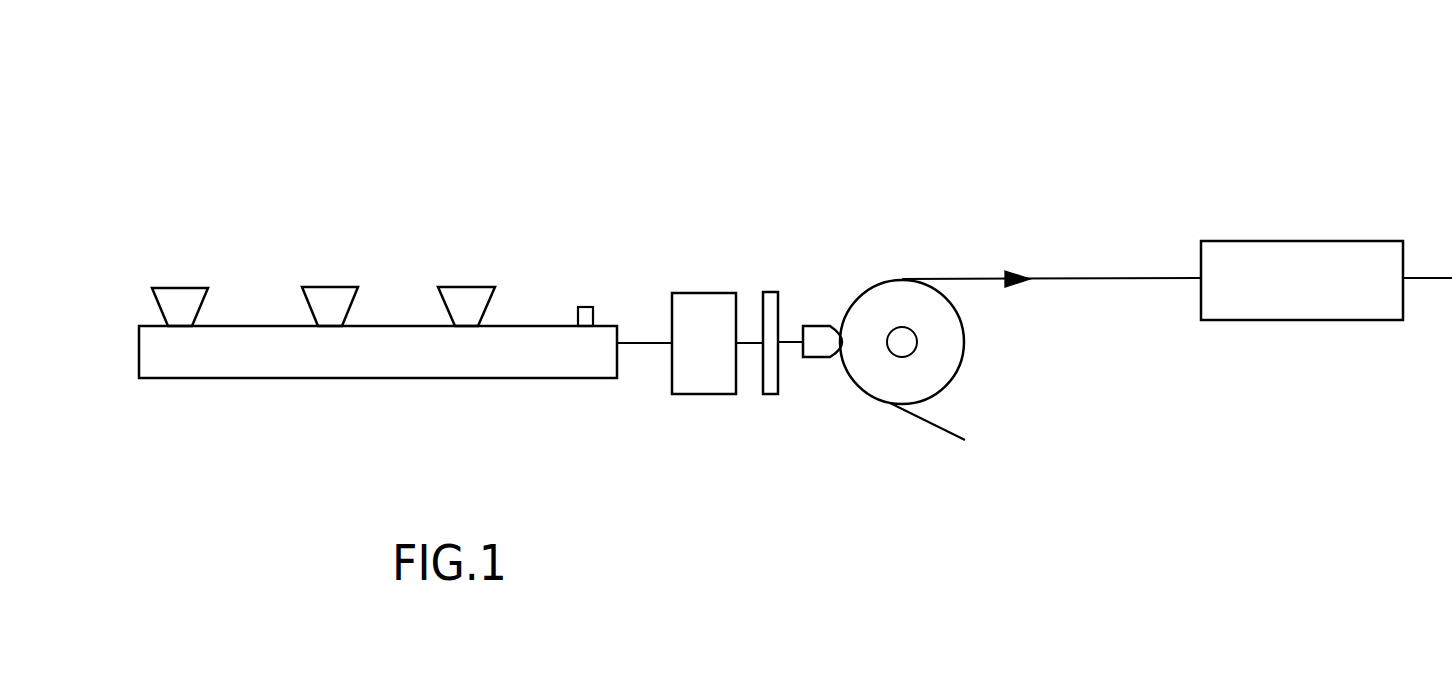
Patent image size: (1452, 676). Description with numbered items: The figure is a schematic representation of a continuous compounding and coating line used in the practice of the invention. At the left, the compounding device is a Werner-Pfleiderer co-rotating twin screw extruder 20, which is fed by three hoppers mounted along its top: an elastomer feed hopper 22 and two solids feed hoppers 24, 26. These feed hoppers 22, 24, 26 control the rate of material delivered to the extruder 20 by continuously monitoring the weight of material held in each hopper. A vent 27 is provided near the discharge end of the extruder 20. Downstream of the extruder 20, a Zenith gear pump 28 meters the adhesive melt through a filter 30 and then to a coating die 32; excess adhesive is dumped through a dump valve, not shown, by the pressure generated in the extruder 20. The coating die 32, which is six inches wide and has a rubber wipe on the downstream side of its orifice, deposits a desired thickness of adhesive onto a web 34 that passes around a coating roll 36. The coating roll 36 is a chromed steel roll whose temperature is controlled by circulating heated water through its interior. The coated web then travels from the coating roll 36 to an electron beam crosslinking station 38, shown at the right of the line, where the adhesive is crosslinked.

The co-rotating twin screw extruder 20 is at (270, 155).
The elastomer feed hopper 22 is at (182, 285).
The solids feed hopper 24 is at (322, 287).
The solids feed hopper 26 is at (458, 285).
The vent 27 is at (583, 305).
The gear pump 28 is at (695, 395).
The filter 30 is at (770, 395).
The coating die 32 is at (814, 323).
The web 34 is at (943, 433).
The coating roll 36 is at (963, 333).
The electron beam crosslinking station 38 is at (1250, 240).